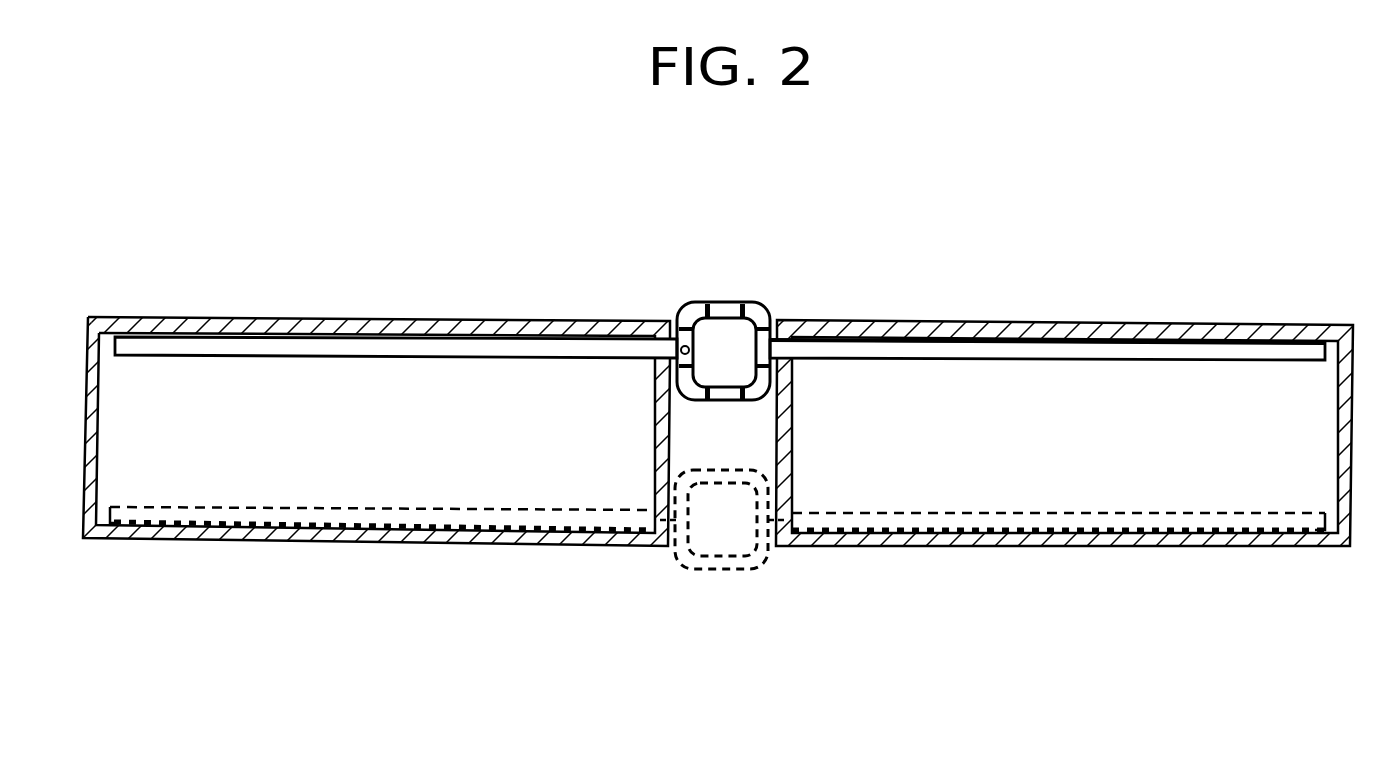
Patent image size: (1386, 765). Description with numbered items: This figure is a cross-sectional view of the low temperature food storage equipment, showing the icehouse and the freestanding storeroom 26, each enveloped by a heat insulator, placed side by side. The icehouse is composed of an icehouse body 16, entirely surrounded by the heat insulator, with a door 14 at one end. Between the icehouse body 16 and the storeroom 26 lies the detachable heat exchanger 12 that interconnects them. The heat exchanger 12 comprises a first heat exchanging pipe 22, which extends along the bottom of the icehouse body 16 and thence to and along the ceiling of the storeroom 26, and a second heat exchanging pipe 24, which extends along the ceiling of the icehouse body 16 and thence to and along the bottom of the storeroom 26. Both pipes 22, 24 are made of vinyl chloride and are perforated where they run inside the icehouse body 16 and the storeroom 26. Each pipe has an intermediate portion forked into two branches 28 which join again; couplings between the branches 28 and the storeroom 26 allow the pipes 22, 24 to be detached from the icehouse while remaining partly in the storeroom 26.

The heat exchanger 12 is at (716, 439).
The door 14 is at (86, 357).
The icehouse body 16 is at (430, 326).
The first heat exchanging pipe 22 is at (560, 360).
The second heat exchanging pipe 24 is at (507, 522).
The storeroom 26 is at (1254, 323).
The branches 28 is at (688, 307).